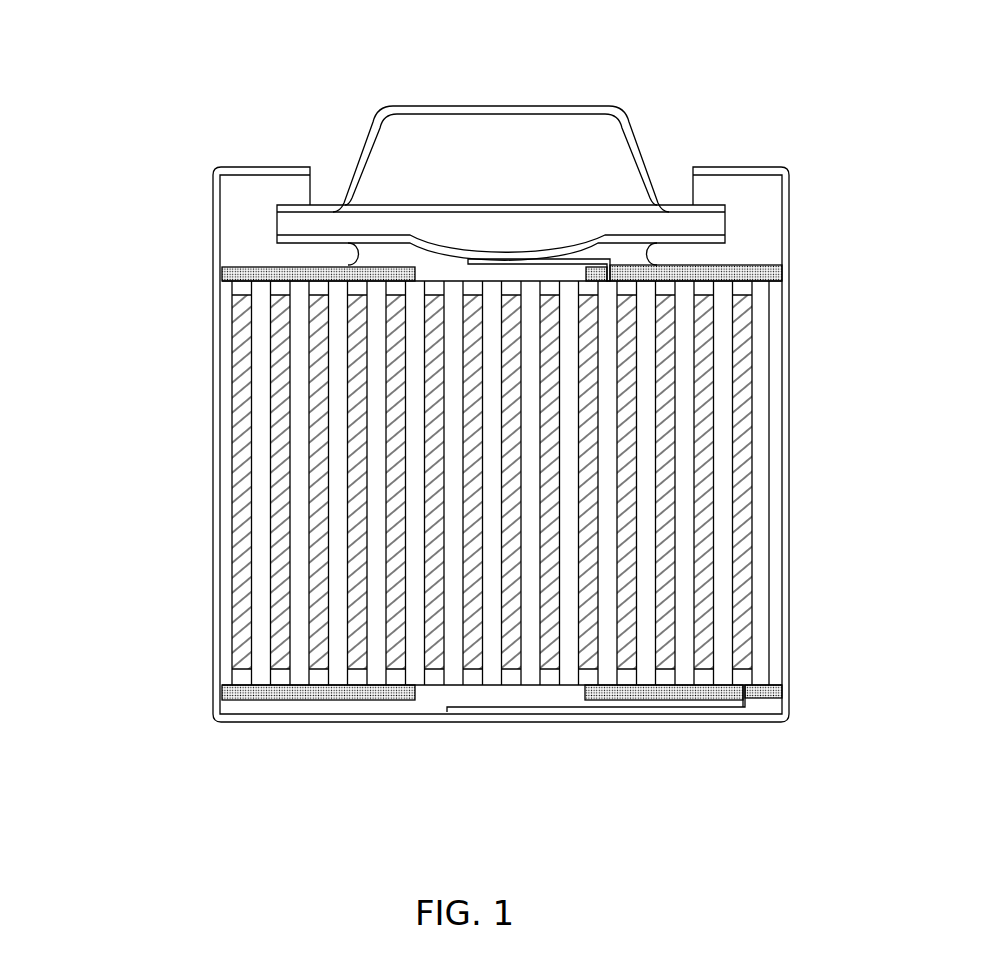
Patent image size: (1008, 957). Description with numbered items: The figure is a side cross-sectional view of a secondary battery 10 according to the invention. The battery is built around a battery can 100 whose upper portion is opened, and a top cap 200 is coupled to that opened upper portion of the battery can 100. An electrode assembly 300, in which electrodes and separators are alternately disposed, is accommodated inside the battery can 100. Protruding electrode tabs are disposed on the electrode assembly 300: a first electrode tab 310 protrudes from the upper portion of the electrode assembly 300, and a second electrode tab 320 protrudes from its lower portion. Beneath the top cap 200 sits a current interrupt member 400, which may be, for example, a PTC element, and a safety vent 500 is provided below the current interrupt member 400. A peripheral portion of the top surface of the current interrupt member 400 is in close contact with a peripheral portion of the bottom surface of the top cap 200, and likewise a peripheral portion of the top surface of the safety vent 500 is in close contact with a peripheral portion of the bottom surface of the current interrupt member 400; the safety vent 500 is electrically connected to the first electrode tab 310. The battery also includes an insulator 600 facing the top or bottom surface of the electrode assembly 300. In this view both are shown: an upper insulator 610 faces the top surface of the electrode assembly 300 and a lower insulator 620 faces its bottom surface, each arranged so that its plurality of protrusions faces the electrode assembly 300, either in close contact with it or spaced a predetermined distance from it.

The secondary battery 10 is at (782, 123).
The battery can 100 is at (790, 437).
The top cap 200 is at (498, 106).
The electrode assembly 300 is at (725, 577).
The first electrode tab 310 is at (600, 259).
The second electrode tab 320 is at (592, 713).
The current interrupt member 400 is at (502, 220).
The safety vent 500 is at (725, 238).
The insulator 600 is at (117, 278).
The upper insulator 610 is at (229, 276).
The lower insulator 620 is at (229, 693).